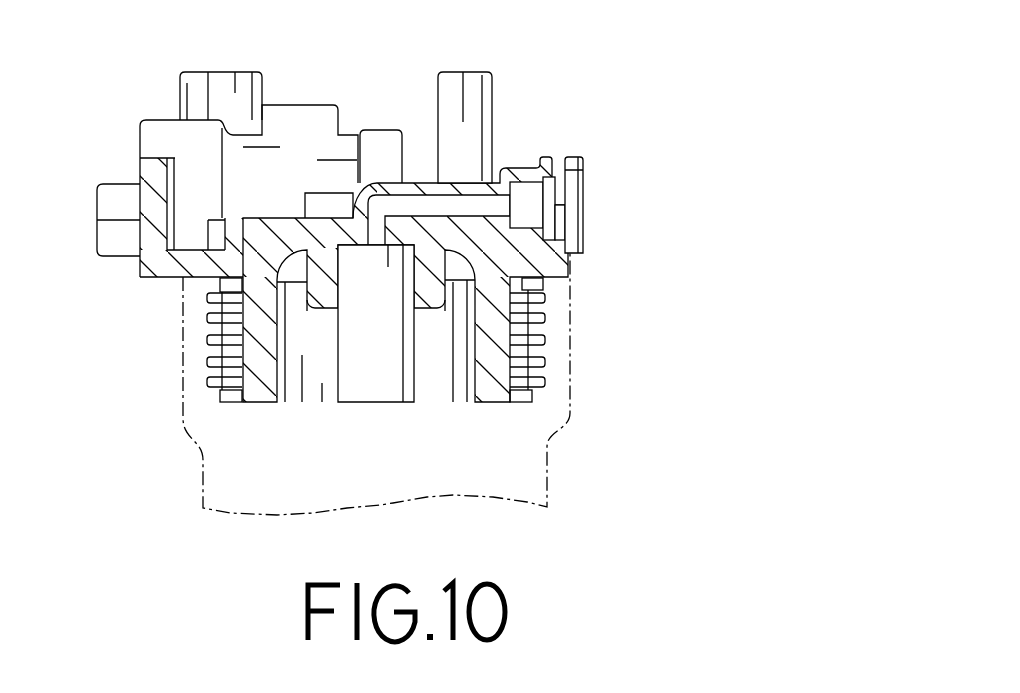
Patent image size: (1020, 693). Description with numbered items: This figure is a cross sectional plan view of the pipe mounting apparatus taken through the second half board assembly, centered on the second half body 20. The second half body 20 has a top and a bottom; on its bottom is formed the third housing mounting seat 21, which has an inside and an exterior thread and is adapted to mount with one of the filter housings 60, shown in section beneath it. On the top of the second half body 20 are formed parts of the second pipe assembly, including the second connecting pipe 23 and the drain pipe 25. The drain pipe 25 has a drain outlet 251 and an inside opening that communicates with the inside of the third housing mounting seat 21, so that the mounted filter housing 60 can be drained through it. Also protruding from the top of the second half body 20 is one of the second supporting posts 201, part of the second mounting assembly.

The second half body 20 is at (568, 259).
The second supporting post 201 is at (467, 74).
The third housing mounting seat 21 is at (543, 345).
The second connecting pipe 23 is at (283, 150).
The drain pipe 25 is at (470, 190).
The drain outlet 251 is at (578, 203).
The filter housing 60 is at (533, 445).